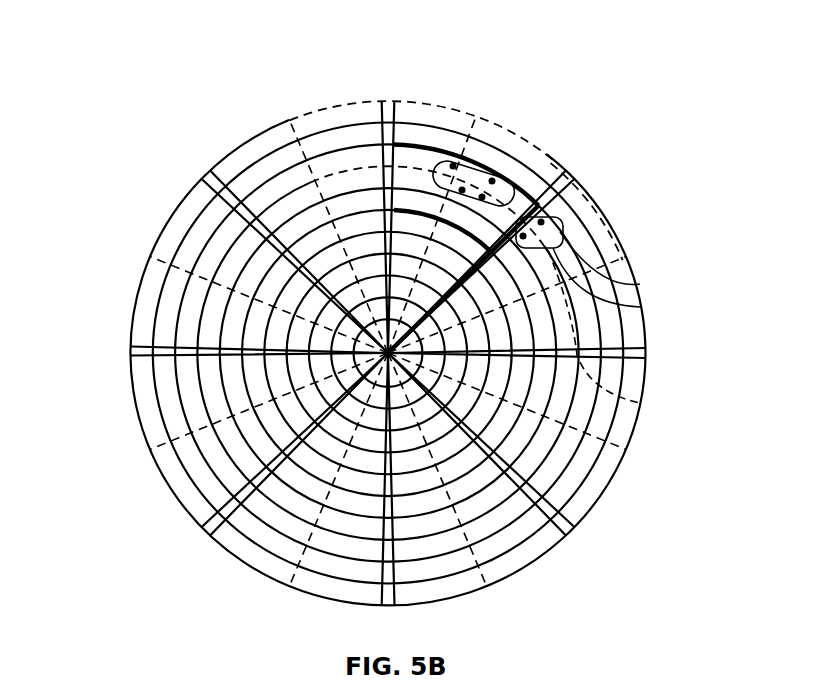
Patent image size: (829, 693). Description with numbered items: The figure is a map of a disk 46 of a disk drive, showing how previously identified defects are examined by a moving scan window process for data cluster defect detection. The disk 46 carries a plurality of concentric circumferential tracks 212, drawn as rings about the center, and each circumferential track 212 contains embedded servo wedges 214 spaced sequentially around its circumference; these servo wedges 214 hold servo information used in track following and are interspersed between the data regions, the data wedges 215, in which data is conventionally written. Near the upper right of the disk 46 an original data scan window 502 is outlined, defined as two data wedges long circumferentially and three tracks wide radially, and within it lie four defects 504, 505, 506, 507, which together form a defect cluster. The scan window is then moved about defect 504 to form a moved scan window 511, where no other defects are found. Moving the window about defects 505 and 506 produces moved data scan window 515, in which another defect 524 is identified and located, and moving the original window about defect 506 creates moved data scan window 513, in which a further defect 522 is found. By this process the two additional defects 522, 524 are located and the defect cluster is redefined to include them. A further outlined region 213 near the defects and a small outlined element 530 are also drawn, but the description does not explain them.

The disk 46 is at (225, 78).
The circumferential track 212 is at (166, 257).
The sensor cluster region 213 is at (457, 140).
The servo wedge 214 is at (394, 100).
The data wedge 215 is at (347, 108).
The data scan window 502 is at (540, 212).
The defect 504 is at (453, 166).
The defect 505 is at (492, 181).
The defect 506 is at (482, 197).
The defect 507 is at (541, 222).
The moved scan window 511 is at (362, 98).
The moved data scan window 513 is at (612, 201).
The moved data scan window 515 is at (640, 403).
The defect 522 is at (640, 284).
The defect 524 is at (640, 307).
The connector 530 is at (558, 220).